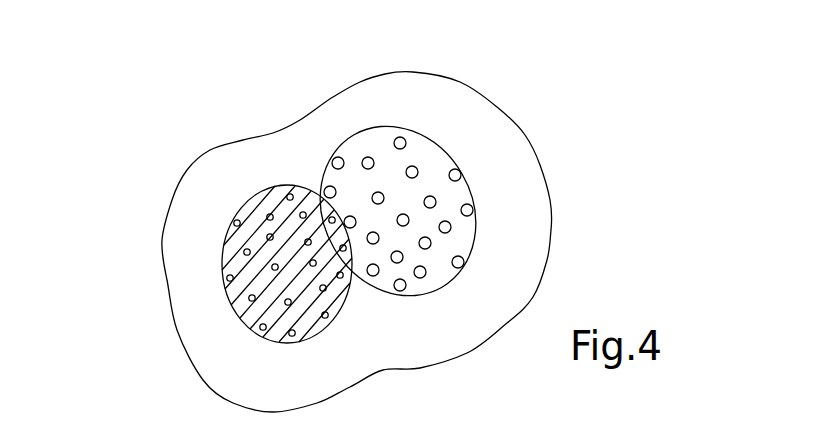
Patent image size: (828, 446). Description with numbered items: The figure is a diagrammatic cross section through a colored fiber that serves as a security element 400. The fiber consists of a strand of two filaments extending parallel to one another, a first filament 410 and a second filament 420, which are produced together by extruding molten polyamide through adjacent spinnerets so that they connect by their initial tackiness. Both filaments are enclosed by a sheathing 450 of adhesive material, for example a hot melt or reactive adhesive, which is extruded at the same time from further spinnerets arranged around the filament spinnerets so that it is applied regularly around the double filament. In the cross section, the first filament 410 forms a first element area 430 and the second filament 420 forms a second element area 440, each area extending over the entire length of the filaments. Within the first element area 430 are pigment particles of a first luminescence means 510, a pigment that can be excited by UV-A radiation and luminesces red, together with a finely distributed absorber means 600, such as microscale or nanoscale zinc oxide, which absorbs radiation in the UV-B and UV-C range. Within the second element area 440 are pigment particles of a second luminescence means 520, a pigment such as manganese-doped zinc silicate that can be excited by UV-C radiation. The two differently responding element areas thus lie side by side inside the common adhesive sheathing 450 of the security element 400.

The security element 400 is at (346, 228).
The sheathing 450 is at (473, 87).
The first filament 410 is at (217, 283).
The first element area 430 is at (214, 264).
The first luminescence means 510 is at (250, 300).
The absorber means 600 is at (263, 340).
The second filament 420 is at (450, 211).
The second element area 440 is at (485, 212).
The second luminescence means 520 is at (467, 260).